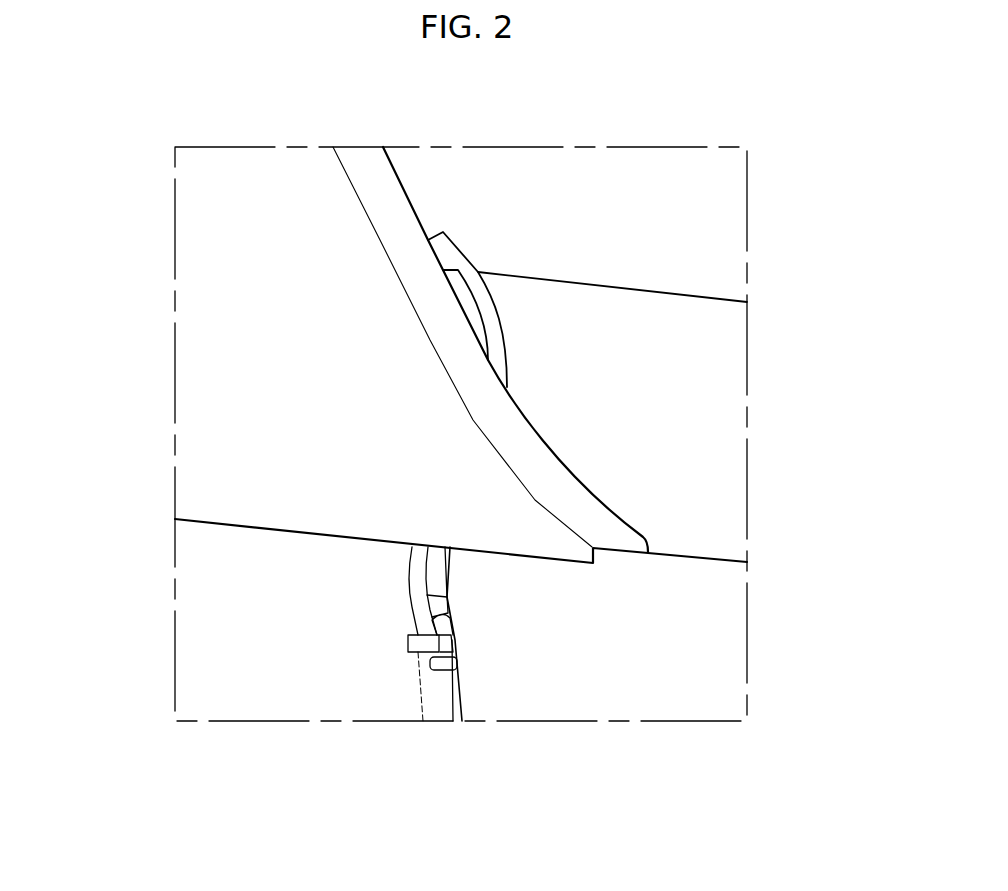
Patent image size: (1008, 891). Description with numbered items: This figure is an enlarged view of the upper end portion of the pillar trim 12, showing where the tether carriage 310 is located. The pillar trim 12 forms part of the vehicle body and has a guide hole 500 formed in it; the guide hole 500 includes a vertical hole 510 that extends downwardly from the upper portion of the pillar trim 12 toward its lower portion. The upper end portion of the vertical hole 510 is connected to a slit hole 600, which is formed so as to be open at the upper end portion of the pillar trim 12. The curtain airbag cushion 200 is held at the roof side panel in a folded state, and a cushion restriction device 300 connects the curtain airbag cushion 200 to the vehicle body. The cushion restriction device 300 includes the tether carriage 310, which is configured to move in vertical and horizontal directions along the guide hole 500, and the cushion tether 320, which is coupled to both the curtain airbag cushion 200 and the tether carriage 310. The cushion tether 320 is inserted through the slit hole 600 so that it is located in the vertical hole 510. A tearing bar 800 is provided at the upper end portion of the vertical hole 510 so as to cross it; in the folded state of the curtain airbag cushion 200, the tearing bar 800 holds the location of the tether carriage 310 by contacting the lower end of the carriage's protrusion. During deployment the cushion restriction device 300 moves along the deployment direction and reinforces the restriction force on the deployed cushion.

The curtain airbag cushion 200 is at (718, 240).
The cushion tether 320 is at (497, 342).
The cushion restriction device 300 is at (405, 595).
The tether carriage 310 is at (408, 643).
The slit hole 600 is at (450, 583).
The guide hole 500 is at (462, 707).
The vertical hole 510 is at (427, 678).
The tearing bar 800 is at (440, 668).
The pillar trim 12 is at (705, 667).